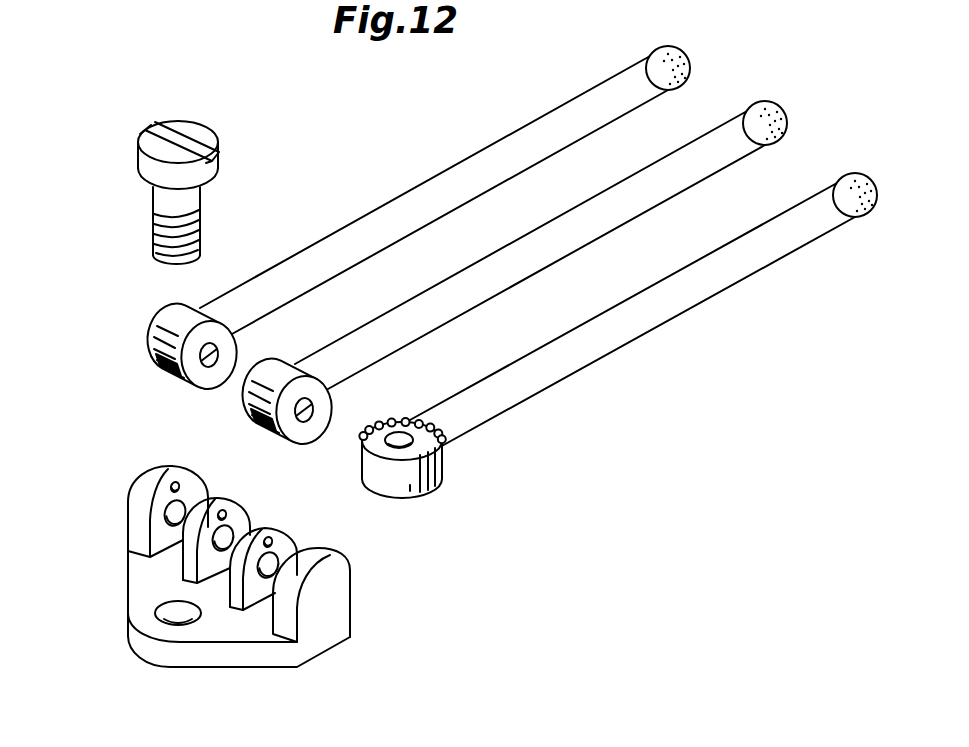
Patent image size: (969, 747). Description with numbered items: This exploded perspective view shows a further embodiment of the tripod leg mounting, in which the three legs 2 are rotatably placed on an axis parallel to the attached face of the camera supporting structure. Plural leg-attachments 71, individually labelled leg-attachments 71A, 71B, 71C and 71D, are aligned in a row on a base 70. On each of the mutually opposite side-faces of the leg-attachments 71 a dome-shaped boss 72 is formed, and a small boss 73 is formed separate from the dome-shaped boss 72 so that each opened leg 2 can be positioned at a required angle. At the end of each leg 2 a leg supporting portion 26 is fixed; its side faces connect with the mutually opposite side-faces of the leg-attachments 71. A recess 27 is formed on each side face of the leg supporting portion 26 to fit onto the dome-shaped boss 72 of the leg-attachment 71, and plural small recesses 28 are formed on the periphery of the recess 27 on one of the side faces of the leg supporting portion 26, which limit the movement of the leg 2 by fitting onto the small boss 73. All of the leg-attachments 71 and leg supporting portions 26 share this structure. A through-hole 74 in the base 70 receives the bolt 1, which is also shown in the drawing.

The bolt 1 is at (140, 150).
The leg 2 is at (677, 319).
The leg supporting portion 26 is at (481, 429).
The recess 27 is at (435, 453).
The small recesses 28 is at (413, 418).
The base 70 is at (207, 624).
The leg-attachments 71 is at (267, 576).
The leg-attachment 71A is at (343, 598).
The leg-attachment 71B is at (298, 541).
The leg-attachment 71C is at (261, 494).
The leg-attachment 71D is at (146, 474).
The dome-shaped boss 72 is at (234, 533).
The small boss 73 is at (225, 511).
The through-hole 74 is at (163, 612).